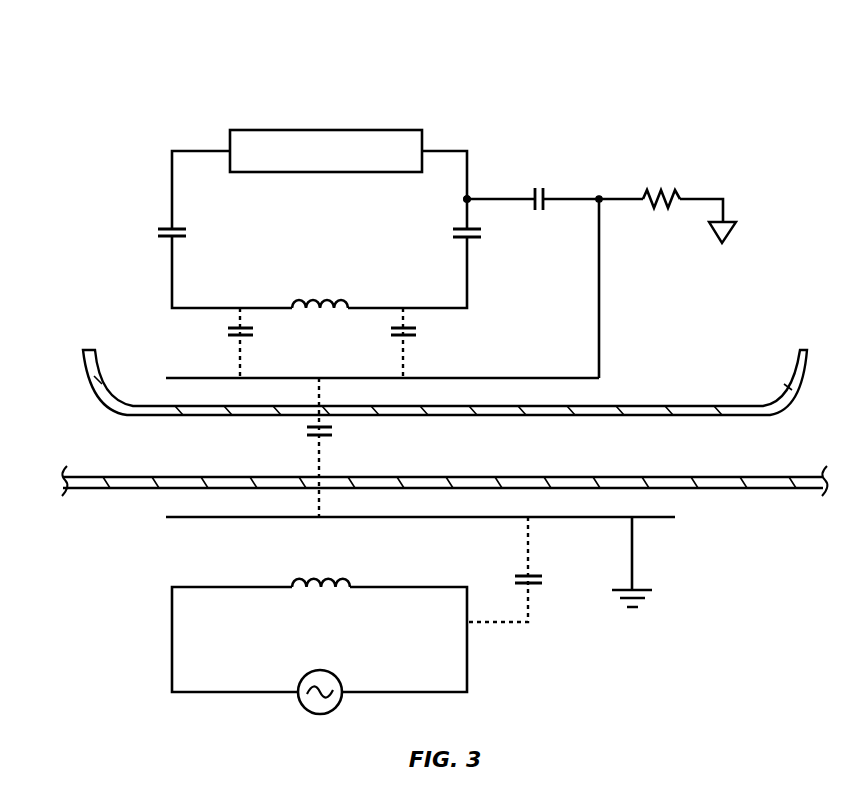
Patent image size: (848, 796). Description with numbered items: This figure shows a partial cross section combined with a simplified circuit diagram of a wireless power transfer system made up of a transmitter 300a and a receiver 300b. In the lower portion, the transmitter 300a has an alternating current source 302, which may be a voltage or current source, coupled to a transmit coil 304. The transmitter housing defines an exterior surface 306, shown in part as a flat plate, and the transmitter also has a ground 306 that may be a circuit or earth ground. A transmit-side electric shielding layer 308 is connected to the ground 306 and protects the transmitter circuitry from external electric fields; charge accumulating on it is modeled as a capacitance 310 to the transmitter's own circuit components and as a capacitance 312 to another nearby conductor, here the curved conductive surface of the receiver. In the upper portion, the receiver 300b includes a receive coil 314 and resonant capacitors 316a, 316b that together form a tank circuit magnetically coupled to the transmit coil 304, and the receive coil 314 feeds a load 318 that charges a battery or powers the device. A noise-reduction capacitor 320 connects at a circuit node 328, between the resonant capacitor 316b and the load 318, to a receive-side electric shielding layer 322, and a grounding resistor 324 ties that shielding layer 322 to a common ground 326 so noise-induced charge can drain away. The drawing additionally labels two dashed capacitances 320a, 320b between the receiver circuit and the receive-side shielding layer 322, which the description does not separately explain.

The transmitter 300a is at (156, 61).
The receiver 300b is at (33, 551).
The alternating current source 302 is at (679, 404).
The transmit coil 304 is at (348, 574).
The exterior surface 306 is at (585, 476).
The transmit-side electric shielding layer 308 is at (207, 522).
The capacitance 310 is at (527, 590).
The capacitance 312 is at (316, 438).
The receive coil 314 is at (320, 292).
The resonant capacitor 316a is at (177, 235).
The resonant capacitor 316b is at (478, 237).
The load 318 is at (315, 130).
The noise-reduction capacitor 320 is at (547, 196).
The parasitic capacitance 320a is at (250, 336).
The parasitic capacitance 320b is at (412, 336).
The receive-side electric shielding layer 322 is at (529, 376).
The grounding resistor 324 is at (670, 189).
The common ground 326 is at (726, 243).
The circuit node 328 is at (470, 196).